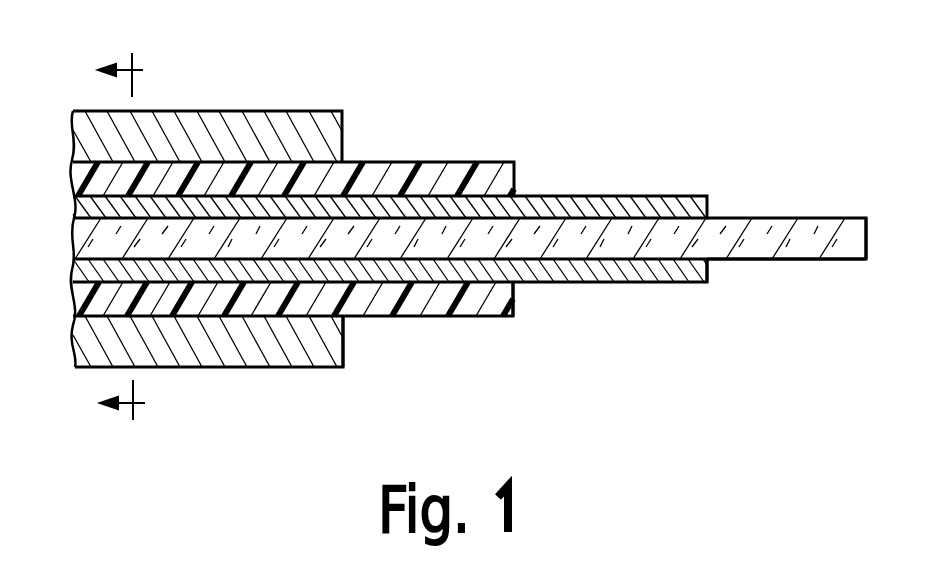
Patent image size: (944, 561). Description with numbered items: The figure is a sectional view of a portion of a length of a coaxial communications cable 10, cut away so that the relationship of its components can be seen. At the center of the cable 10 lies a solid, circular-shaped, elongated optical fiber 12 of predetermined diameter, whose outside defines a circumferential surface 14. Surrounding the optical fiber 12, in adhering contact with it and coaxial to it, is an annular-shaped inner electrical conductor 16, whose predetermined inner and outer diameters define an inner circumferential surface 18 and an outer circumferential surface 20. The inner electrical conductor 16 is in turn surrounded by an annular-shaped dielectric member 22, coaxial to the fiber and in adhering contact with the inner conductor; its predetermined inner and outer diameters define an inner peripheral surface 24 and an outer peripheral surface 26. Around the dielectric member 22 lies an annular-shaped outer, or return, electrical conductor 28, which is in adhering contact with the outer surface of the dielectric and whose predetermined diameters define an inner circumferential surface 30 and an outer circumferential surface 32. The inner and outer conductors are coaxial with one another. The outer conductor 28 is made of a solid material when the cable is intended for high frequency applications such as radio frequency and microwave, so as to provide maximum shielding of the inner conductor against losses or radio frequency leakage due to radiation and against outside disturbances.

The coaxial communications cable 10 is at (459, 231).
The optical fiber 12 is at (848, 272).
The circumferential surface 14 is at (798, 217).
The inner electrical conductor 16 is at (626, 298).
The inner circumferential surface 18 is at (710, 263).
The outer circumferential surface 20 is at (610, 195).
The dielectric member 22 is at (407, 172).
The inner peripheral surface 24 is at (515, 284).
The outer peripheral surface 26 is at (443, 318).
The outer electrical conductor 28 is at (81, 384).
The inner circumferential surface 30 is at (343, 318).
The outer circumferential surface 32 is at (285, 110).